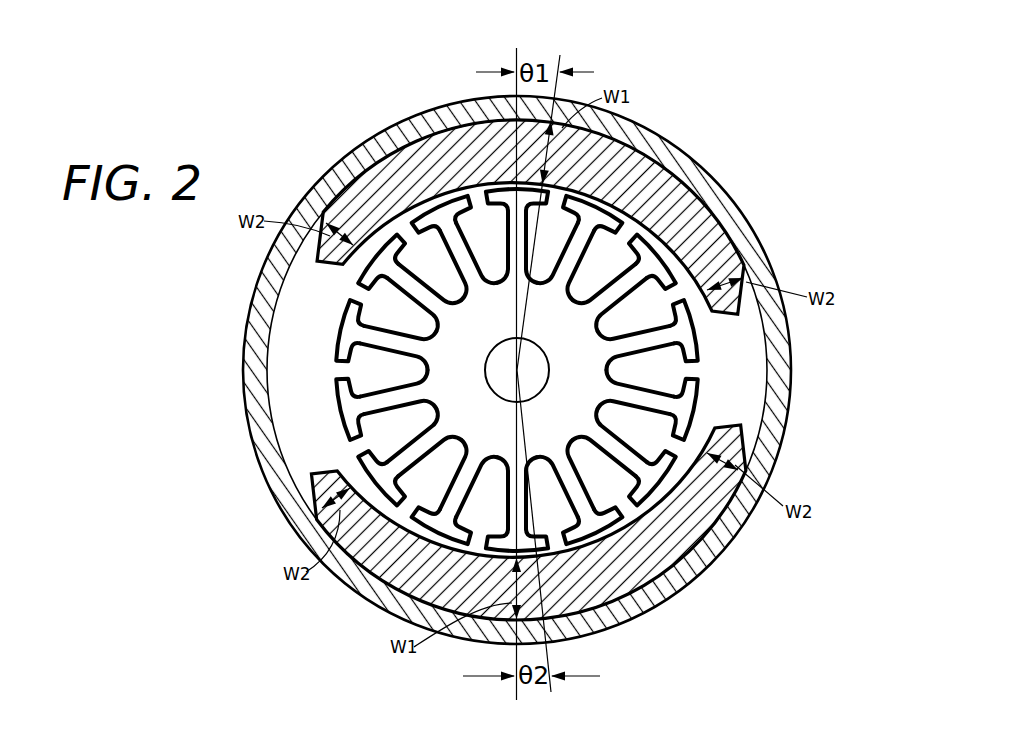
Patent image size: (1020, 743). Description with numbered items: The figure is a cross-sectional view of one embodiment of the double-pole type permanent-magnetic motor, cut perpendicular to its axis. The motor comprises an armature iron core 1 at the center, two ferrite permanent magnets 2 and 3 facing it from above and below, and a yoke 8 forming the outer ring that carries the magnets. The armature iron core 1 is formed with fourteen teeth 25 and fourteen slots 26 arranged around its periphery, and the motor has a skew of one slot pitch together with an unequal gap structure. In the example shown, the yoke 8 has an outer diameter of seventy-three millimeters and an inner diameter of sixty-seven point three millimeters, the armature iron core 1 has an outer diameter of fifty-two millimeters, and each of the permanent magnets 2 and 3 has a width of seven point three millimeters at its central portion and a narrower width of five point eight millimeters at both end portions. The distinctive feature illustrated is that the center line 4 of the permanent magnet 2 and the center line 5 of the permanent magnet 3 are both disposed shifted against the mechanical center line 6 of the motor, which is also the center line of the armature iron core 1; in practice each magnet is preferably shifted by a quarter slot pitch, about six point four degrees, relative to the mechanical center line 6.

The armature iron core 1 is at (524, 352).
The permanent magnet 2 is at (663, 183).
The permanent magnet 3 is at (710, 510).
The center line of the permanent magnet 2 4 is at (558, 64).
The center line of the permanent magnet 3 5 is at (548, 659).
The mechanical center line 6 is at (515, 61).
The yoke 8 is at (372, 156).
The teeth 25 is at (383, 262).
The slots 26 is at (363, 298).